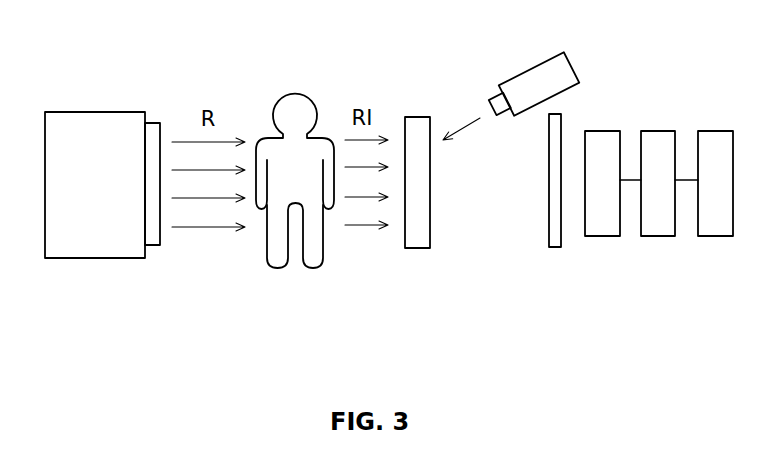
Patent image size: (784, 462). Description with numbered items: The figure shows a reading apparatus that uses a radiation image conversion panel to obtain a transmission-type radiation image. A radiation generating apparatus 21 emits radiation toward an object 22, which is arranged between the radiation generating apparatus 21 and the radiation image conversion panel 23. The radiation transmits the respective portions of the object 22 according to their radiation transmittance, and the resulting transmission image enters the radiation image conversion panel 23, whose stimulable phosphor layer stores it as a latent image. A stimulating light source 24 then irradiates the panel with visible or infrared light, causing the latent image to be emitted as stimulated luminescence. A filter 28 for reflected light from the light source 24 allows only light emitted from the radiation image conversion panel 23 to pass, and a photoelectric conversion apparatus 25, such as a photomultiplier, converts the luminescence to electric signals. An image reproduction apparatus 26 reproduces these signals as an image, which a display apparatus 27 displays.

The radiation generating apparatus 21 is at (98, 258).
The object 22 is at (280, 268).
The radiation image conversion panel 23 is at (417, 248).
The stimulating light source 24 is at (572, 55).
The photoelectric conversion apparatus 25 is at (604, 236).
The image reproduction apparatus 26 is at (660, 236).
The display apparatus 27 is at (715, 236).
The filter 28 is at (555, 247).